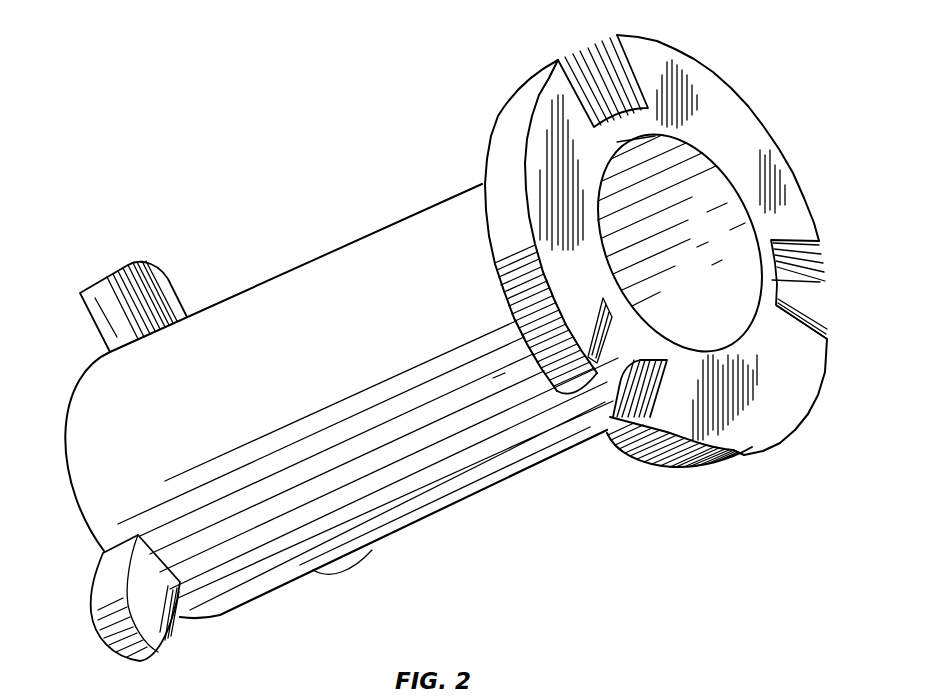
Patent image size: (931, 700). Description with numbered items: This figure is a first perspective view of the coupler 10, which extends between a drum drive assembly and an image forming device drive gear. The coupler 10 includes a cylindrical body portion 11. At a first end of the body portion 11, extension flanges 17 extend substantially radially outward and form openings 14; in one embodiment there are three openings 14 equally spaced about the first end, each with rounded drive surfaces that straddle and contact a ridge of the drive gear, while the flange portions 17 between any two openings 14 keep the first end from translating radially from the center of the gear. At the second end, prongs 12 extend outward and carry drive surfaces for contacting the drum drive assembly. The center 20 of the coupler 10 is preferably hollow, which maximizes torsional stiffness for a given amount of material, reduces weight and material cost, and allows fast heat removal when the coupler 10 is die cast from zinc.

The coupler 10 is at (68, 355).
The cylindrical body portion 11 is at (278, 307).
The prongs 12 is at (149, 296).
The openings 14 is at (569, 65).
The extension flanges 17 is at (557, 138).
The center 20 is at (735, 252).